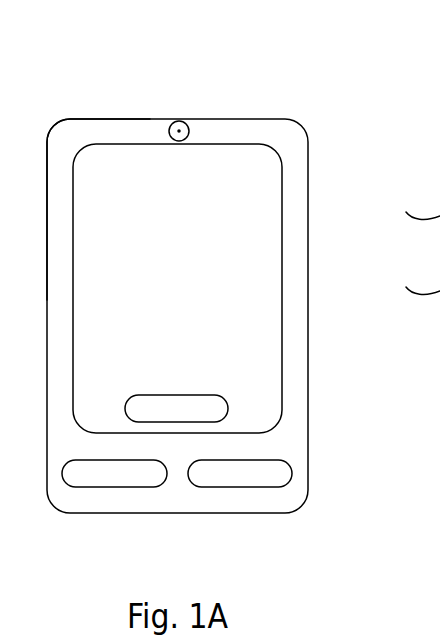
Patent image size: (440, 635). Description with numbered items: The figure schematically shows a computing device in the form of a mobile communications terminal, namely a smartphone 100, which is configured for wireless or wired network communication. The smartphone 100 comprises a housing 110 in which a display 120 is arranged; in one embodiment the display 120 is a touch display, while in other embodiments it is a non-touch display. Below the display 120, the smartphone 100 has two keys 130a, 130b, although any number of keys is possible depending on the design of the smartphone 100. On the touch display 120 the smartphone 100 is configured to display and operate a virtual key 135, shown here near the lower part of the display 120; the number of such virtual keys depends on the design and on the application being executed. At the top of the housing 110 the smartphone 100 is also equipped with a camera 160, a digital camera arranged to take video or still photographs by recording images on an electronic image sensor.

The smartphone 100 is at (67, 108).
The housing 110 is at (308, 225).
The display 120 is at (268, 292).
The virtual key 135 is at (228, 410).
The key 130a is at (112, 487).
The key 130b is at (292, 475).
The camera 160 is at (179, 121).